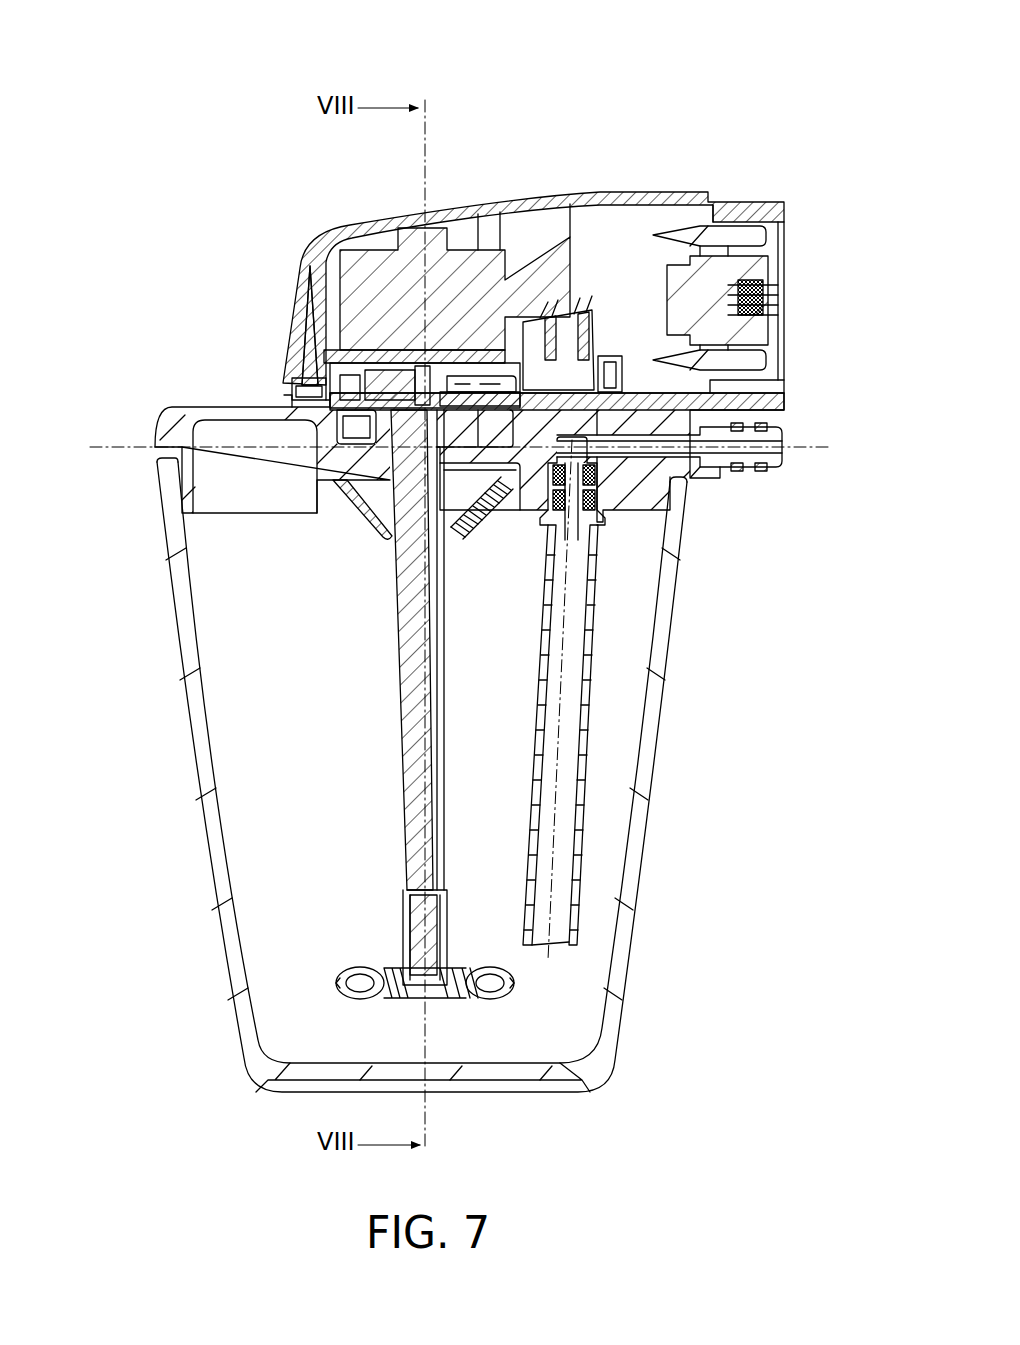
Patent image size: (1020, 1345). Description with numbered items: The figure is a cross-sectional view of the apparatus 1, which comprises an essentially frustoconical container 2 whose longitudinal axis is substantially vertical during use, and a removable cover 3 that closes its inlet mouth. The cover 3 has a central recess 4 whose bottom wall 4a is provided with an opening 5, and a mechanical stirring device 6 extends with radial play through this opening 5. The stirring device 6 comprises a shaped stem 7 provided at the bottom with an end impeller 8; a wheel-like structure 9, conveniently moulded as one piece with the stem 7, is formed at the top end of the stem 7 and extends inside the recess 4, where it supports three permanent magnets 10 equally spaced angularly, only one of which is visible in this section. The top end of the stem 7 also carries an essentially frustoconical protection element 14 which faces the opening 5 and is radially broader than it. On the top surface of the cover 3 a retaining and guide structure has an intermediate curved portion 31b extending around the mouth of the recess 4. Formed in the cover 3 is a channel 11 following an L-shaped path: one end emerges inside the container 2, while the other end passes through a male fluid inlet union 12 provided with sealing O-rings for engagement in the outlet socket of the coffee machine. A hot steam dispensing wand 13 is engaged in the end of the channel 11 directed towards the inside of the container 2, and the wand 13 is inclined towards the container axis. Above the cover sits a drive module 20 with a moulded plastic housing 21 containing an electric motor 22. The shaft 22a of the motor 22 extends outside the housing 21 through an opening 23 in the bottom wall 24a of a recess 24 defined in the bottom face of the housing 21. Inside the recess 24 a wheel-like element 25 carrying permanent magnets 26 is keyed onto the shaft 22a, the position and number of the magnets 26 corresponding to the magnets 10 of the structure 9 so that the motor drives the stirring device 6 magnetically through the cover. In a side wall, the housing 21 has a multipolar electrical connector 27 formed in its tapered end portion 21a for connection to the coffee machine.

The apparatus 1 is at (273, 210).
The container 2 is at (190, 692).
The cover 3 is at (449, 418).
The central recess 4 is at (400, 516).
The bottom wall 4a is at (345, 488).
The opening 5 is at (398, 524).
The mechanical stirring device 6 is at (366, 754).
The shaped stem 7 is at (372, 697).
The end impeller 8 is at (346, 966).
The wheel-like structure 9 is at (340, 446).
The permanent magnets 10 is at (340, 419).
The channel 11 is at (640, 448).
The fluid inlet union 12 is at (782, 455).
The hot steam dispensing wand 13 is at (585, 818).
The protection element 14 is at (470, 534).
The drive module 20 is at (536, 221).
The housing 21 is at (550, 198).
The end portion 21a is at (760, 200).
The electric motor 22 is at (367, 313).
The shaft 22a is at (455, 345).
The opening 23 is at (400, 326).
The recess 24 is at (310, 382).
The bottom wall 24a is at (357, 360).
The wheel-like element 25 is at (553, 310).
The permanent magnets 26 is at (300, 390).
The multipolar electrical connector 27 is at (775, 284).
The intermediate curved portion 31b is at (176, 442).